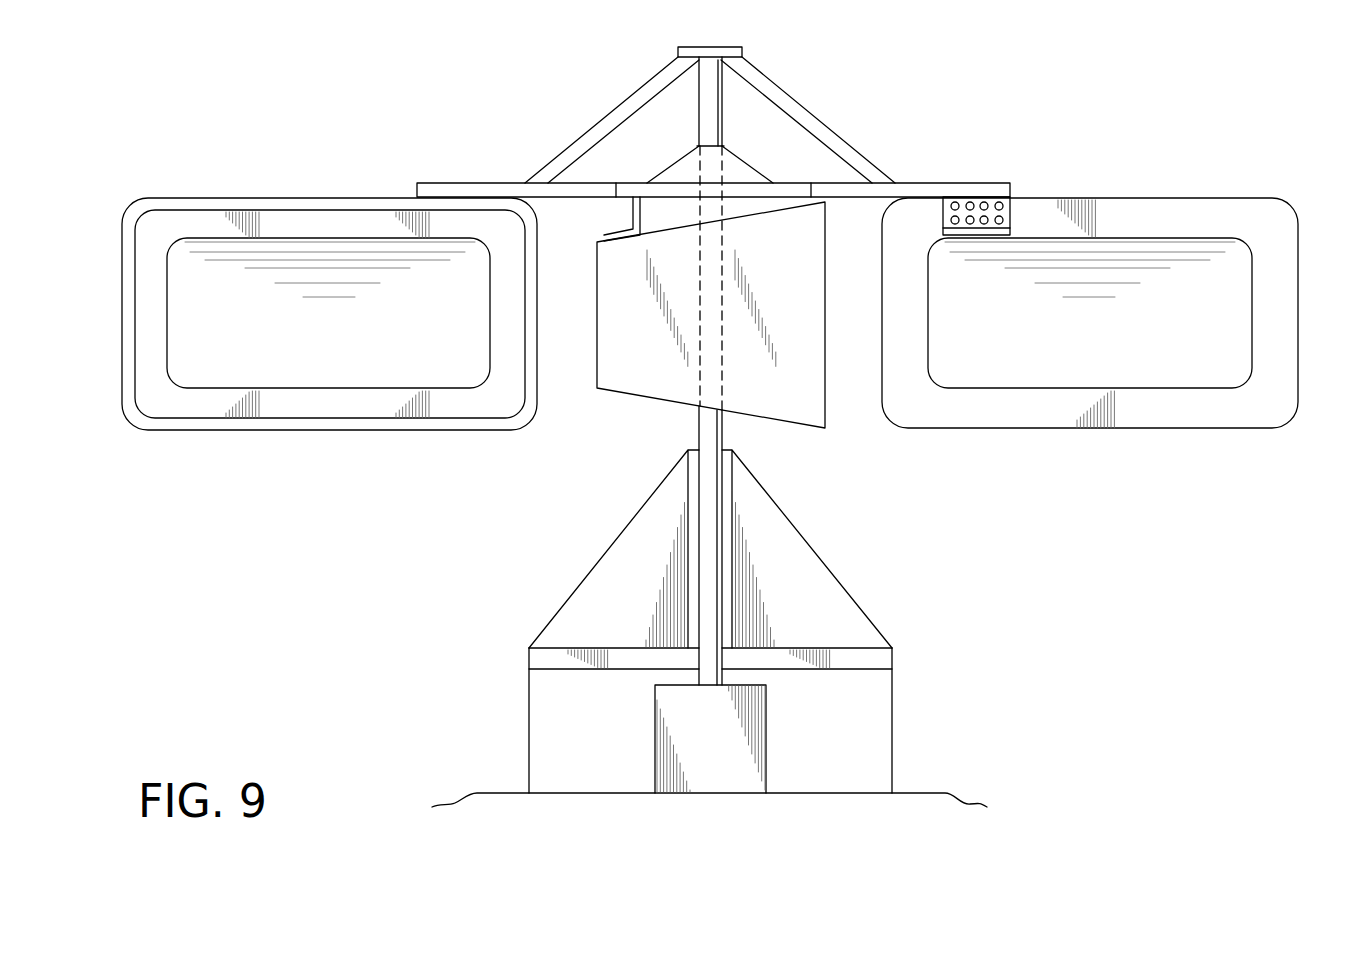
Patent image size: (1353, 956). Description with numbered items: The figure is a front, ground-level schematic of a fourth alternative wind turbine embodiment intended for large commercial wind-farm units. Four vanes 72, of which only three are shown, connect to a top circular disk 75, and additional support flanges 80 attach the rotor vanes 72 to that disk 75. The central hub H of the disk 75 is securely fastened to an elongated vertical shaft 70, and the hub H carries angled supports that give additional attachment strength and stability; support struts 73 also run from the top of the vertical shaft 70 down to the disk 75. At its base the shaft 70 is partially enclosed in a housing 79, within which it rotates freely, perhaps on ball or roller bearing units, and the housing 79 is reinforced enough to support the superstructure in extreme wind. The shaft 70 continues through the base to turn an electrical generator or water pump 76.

The elongated vertical shaft 70 is at (723, 435).
The vanes 72 is at (292, 432).
The support struts 73 is at (628, 97).
The top circular disk 75 is at (437, 183).
The electrical generator or water pump 76 is at (767, 740).
The housing 79 is at (603, 578).
The support flanges 80 is at (633, 218).
The hub H is at (842, 118).